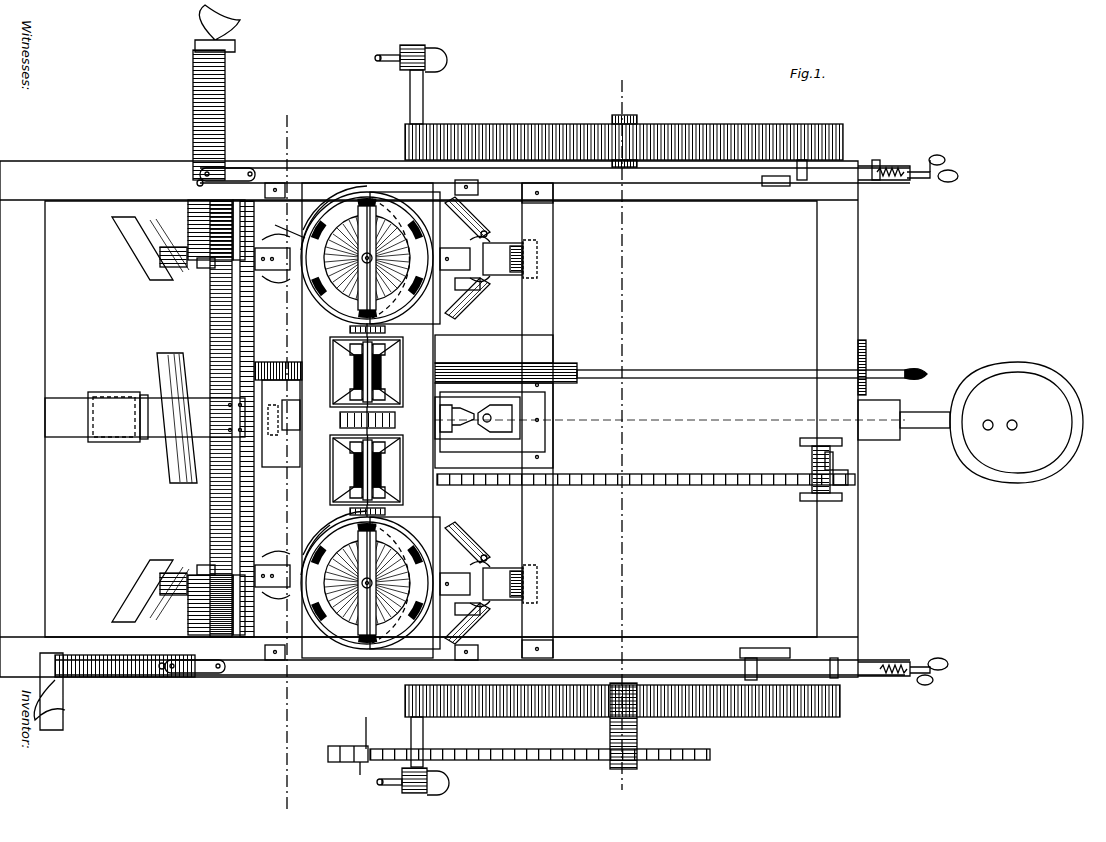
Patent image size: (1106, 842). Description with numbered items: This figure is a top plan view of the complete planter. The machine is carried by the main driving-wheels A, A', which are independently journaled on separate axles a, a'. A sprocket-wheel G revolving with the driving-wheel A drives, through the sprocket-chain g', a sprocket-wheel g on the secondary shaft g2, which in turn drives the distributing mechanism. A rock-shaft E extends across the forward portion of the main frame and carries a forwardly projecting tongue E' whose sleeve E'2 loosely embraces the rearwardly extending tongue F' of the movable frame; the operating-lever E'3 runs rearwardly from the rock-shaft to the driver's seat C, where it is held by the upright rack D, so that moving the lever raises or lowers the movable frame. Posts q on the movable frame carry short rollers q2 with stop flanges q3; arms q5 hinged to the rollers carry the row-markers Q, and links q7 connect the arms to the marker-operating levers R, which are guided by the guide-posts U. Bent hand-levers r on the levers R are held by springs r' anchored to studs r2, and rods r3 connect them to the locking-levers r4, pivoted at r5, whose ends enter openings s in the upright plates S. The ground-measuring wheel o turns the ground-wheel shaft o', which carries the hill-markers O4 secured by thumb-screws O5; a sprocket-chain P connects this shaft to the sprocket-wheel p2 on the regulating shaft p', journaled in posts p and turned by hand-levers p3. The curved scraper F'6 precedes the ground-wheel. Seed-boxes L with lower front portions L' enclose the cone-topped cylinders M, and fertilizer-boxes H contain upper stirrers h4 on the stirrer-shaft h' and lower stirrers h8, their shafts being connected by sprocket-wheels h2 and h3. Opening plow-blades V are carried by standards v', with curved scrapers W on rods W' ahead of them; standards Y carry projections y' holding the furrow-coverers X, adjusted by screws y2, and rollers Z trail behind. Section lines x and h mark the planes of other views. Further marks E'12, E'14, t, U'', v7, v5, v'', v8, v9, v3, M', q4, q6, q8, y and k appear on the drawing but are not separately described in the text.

The tongue or arm of movable frame F' is at (429, 419).
The rock-shaft E is at (217, 419).
The projecting tongue or arm E' is at (145, 372).
The sleeve E'2 is at (118, 417).
The operating-lever E'3 is at (681, 436).
The bracket E'12 is at (382, 423).
The bar E'14 is at (359, 407).
The stone-removing and ground-leveling scraper F'6 is at (161, 417).
The main driving-wheel A' is at (624, 130).
The main driving-wheel A is at (622, 711).
The axle a is at (613, 726).
The axle a' is at (617, 130).
The ground-wheel shaft o' is at (430, 418).
The hill-markers O4 is at (437, 48).
The thumb-screws O5 is at (382, 431).
The sprocket-wheel G is at (551, 755).
The sprocket-wheel g is at (336, 760).
The sprocket-chain g' is at (349, 773).
The secondary shaft g2 is at (360, 725).
The guide-posts U is at (348, 419).
The cylinders M is at (367, 420).
The bar t is at (367, 420).
The plate U'' is at (405, 420).
The seed-boxes L is at (334, 387).
The lower front portion of seed-box L' is at (335, 355).
The lever v7 is at (312, 370).
The pin v5 is at (368, 486).
The arm v'' is at (298, 475).
The arm v8 is at (427, 535).
The block M' is at (280, 417).
The opening plow-blades V is at (276, 416).
The standards or rods v' is at (281, 550).
The fertilizer-boxes H is at (375, 420).
The sprocket-wheel h3 is at (395, 418).
The sprocket-wheels h2 is at (385, 329).
The stirrers h4 is at (355, 488).
The revolving stirrers h8 is at (354, 470).
The stirrer-shaft h' is at (414, 393).
The upright rack D is at (866, 352).
The driver's seat C is at (976, 422).
The sprocket-chain P is at (646, 470).
The upright posts p is at (811, 470).
The ground-wheel-regulating shaft p' is at (807, 469).
The sprocket-wheel p2 is at (848, 478).
The hand-levers p3 is at (833, 460).
The row-marker-operating levers R is at (507, 418).
The bent hand-levers r is at (908, 416).
The springs r' is at (870, 441).
The studs r2 is at (853, 408).
The rods r3 is at (843, 417).
The double bent locking-levers r4 is at (810, 175).
The pivot r5 is at (790, 409).
The upright plates S is at (774, 428).
The openings s is at (760, 186).
The upwardly-extending posts q is at (206, 417).
The short spindles or rollers q2 is at (205, 228).
The stops or flanges q3 is at (199, 416).
The piece q4 is at (195, 177).
The arms q5 is at (140, 375).
The pivot q6 is at (200, 180).
The links q7 is at (225, 168).
The piece q8 is at (251, 655).
The row-markers Q is at (164, 367).
The curved scrapers W is at (143, 419).
The standards or rods W' is at (147, 428).
The section line x x is at (323, 452).
The section line h h is at (621, 436).
The block y is at (455, 421).
The projections y' is at (478, 415).
The screws y2 is at (485, 610).
The rollers Z is at (537, 258).
The furrow-coverers X is at (467, 416).
The pin v9 is at (483, 386).
The piece v3 is at (476, 446).
The ground-measuring wheel o is at (477, 414).
The standards or rods Y is at (504, 420).
The housing k is at (494, 401).